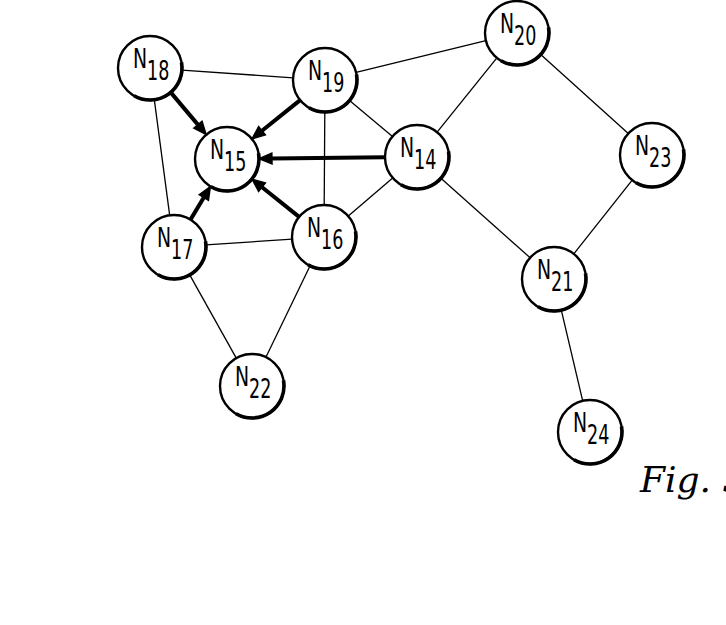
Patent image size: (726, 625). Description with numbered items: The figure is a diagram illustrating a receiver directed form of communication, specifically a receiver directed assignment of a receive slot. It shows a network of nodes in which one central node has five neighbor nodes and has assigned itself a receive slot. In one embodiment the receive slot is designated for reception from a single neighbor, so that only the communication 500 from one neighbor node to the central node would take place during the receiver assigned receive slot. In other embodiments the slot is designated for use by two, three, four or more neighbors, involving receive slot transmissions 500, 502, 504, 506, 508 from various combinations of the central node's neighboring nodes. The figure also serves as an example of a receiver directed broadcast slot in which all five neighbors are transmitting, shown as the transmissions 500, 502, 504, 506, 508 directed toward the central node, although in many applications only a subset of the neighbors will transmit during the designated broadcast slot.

The communication 500 is at (345, 158).
The receive slot transmission 502 is at (270, 196).
The receive slot transmission 504 is at (207, 190).
The receive slot transmission 506 is at (197, 123).
The receive slot transmission 508 is at (275, 122).